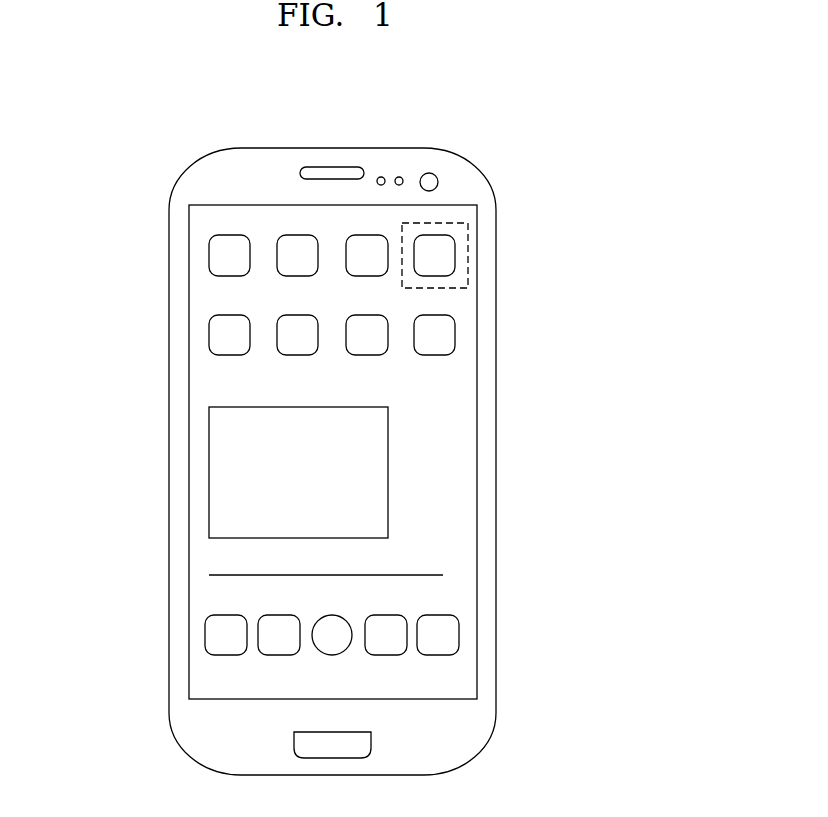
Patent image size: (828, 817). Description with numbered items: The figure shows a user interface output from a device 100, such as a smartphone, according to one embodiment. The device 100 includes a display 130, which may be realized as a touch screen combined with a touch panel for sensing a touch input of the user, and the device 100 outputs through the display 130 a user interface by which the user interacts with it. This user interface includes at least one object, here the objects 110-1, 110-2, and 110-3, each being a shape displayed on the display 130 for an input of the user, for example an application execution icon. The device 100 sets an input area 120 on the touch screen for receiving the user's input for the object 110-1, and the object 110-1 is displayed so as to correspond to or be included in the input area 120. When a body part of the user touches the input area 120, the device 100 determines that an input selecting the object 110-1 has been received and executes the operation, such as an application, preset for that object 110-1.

The device 100 is at (333, 148).
The display 130 is at (189, 299).
The input area 120 is at (468, 242).
The object 110-1 is at (455, 254).
The object 110-2 is at (209, 470).
The object 110-3 is at (205, 640).